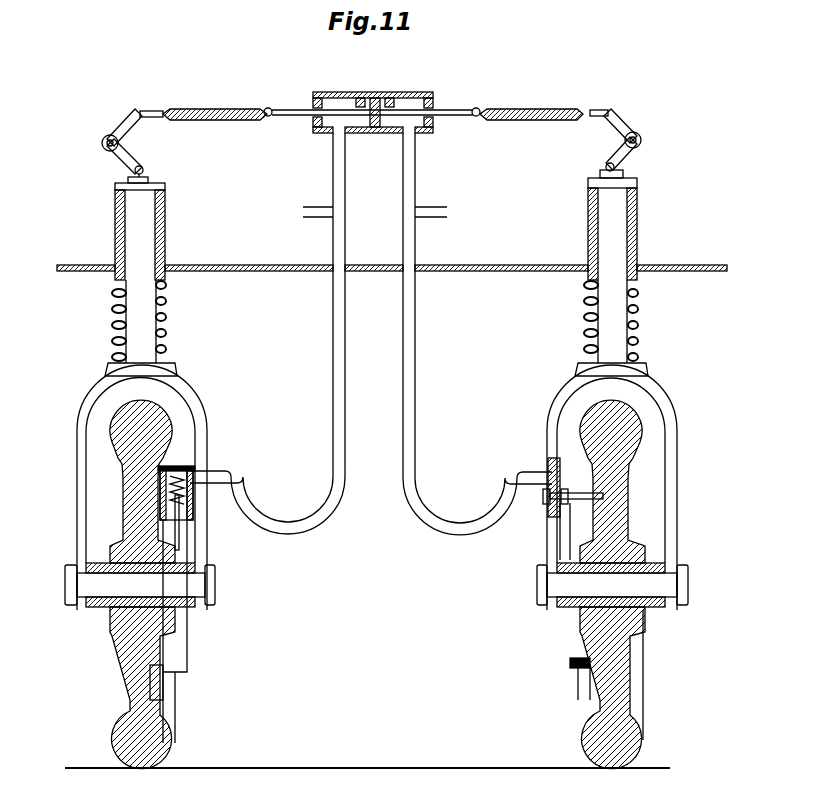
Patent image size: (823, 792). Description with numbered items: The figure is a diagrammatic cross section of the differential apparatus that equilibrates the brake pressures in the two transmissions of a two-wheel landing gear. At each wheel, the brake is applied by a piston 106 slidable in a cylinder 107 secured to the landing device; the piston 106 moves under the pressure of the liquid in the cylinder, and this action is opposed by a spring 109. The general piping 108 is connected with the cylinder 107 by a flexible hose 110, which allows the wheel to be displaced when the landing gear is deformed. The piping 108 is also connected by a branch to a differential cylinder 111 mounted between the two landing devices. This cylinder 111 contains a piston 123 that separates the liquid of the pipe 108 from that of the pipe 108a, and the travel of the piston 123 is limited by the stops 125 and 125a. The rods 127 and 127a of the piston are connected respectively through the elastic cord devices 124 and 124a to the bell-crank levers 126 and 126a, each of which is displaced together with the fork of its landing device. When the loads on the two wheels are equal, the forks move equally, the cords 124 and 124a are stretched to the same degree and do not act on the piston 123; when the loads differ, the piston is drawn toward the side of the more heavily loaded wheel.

The piston 106 is at (180, 476).
The cylinder 107 is at (178, 466).
The general piping 108 is at (313, 213).
The pipe 108a is at (428, 214).
The spring 109 is at (183, 521).
The flexible hose 110 is at (302, 526).
The differential cylinder 111 is at (316, 134).
The piston 123 is at (375, 128).
The elastic cord device 124 is at (207, 122).
The elastic cord device 124a is at (537, 121).
The stop 125 is at (360, 104).
The stop 125a is at (388, 104).
The bell-crank lever 126 is at (120, 133).
The bell-crank lever 126a is at (622, 129).
The rod 127 is at (304, 111).
The rod 127a is at (455, 110).